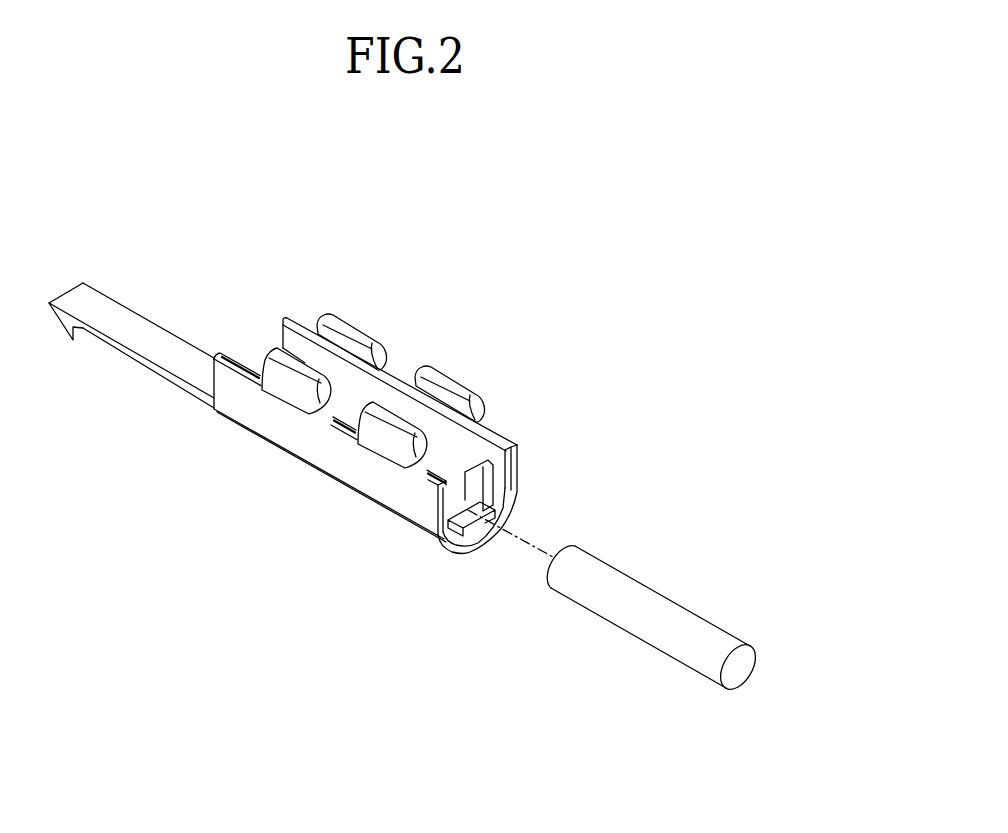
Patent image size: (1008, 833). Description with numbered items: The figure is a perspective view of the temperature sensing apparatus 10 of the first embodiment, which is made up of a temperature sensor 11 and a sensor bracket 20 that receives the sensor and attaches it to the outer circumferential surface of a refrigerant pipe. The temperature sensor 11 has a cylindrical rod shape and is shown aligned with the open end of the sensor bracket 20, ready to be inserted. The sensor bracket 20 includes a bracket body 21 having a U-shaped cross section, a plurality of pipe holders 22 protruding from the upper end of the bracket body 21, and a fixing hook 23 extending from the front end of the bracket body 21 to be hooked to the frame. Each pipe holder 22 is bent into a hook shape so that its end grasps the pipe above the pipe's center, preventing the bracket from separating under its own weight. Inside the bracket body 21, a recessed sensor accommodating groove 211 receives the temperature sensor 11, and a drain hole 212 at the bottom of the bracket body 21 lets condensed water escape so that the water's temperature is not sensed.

The temperature sensing apparatus 10 is at (694, 232).
The temperature sensor 11 is at (643, 625).
The sensor bracket 20 is at (268, 495).
The bracket body 21 is at (417, 508).
The pipe holder 22 is at (351, 326).
The fixing hook 23 is at (155, 333).
The sensor accommodating groove 211 is at (470, 503).
The drain hole 212 is at (451, 495).